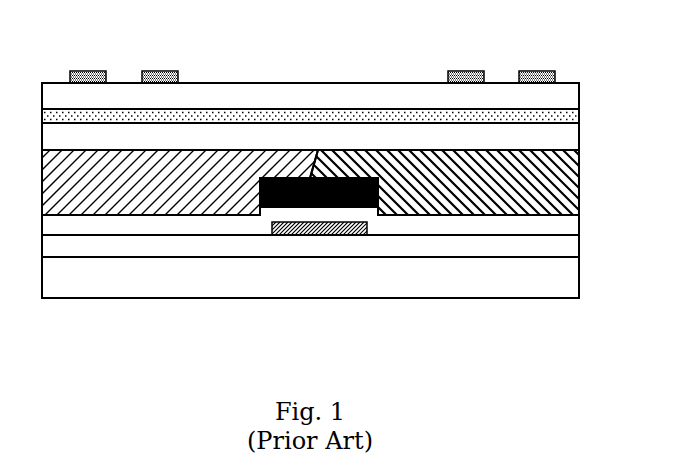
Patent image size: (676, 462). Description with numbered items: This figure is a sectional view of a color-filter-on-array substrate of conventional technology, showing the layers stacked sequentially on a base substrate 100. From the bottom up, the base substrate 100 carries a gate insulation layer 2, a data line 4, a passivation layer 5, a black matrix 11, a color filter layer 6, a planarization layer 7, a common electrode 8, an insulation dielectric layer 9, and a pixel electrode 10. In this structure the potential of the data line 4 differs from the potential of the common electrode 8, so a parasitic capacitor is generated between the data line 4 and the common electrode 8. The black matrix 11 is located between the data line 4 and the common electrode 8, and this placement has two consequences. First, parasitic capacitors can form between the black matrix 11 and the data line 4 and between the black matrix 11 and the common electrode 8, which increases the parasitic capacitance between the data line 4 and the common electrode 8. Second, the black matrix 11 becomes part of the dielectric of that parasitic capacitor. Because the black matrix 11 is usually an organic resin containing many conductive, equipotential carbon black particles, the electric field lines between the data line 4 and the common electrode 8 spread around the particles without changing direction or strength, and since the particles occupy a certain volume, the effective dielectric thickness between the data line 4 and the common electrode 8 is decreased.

The base substrate 100 is at (98, 279).
The gate insulation layer 2 is at (159, 243).
The passivation layer 5 is at (230, 229).
The data line 4 is at (298, 235).
The black matrix 11 is at (343, 207).
The color filter layer 6 is at (429, 216).
The planarization layer 7 is at (204, 140).
The common electrode 8 is at (284, 115).
The insulation dielectric layer 9 is at (366, 93).
The pixel electrode 10 is at (466, 70).